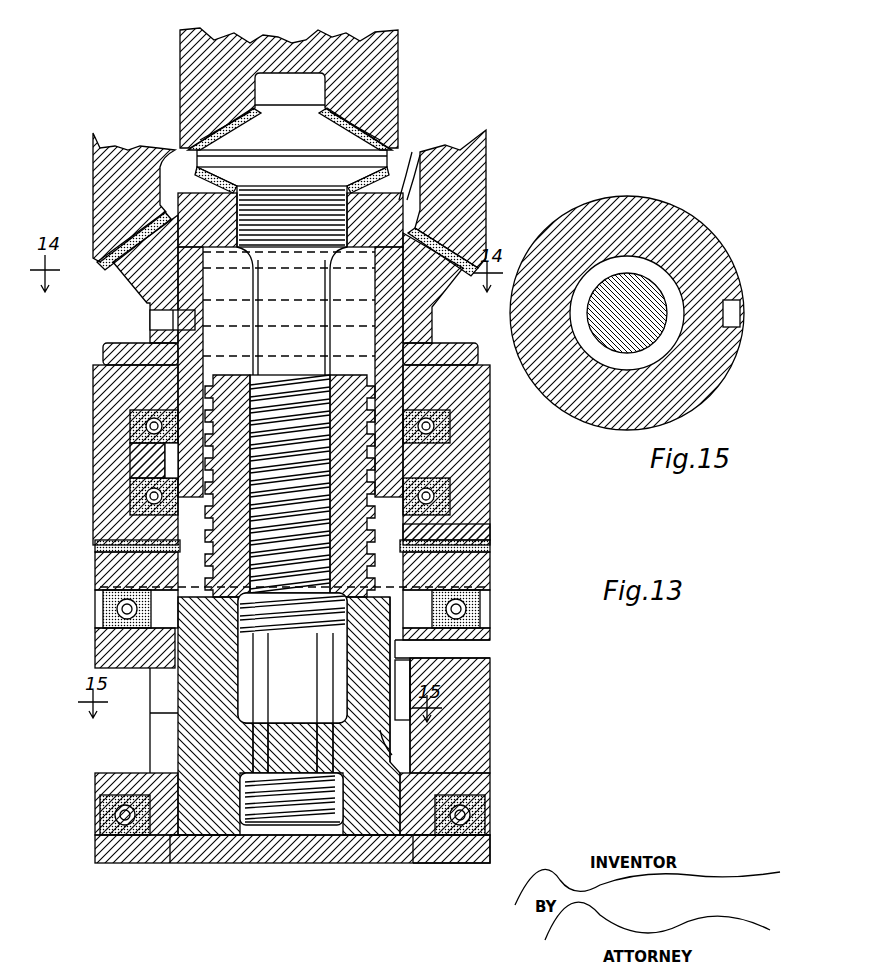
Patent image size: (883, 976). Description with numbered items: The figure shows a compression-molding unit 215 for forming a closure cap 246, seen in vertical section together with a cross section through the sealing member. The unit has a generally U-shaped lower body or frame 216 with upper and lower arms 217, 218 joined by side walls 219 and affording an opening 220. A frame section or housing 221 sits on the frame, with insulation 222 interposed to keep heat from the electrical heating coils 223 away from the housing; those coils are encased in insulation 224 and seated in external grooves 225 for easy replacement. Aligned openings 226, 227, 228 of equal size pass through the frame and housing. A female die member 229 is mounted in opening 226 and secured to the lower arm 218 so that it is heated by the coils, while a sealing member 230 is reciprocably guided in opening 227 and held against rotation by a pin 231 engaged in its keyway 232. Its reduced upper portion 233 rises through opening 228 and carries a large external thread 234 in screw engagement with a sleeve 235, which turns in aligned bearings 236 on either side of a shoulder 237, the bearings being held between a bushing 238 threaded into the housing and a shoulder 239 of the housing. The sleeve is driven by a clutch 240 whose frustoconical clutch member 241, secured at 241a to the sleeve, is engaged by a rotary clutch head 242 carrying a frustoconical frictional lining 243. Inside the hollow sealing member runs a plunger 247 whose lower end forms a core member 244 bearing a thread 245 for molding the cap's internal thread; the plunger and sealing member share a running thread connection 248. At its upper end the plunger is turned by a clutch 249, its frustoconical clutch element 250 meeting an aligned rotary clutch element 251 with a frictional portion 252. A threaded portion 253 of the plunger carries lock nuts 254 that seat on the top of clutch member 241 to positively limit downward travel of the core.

In FIG. 13, the unit 215 is at (68, 414).
In FIG. 13, the lower body or frame 216 is at (478, 750).
In FIG. 13, the upper arm 217 is at (485, 565).
In FIG. 13, the lower arm 218 is at (130, 862).
In FIG. 13, the side walls 219 is at (480, 728).
In FIG. 13, the opening 220 is at (140, 761).
In FIG. 13, the frame section or housing 221 is at (487, 478).
In FIG. 13, the insulation 222 is at (492, 546).
In FIG. 13, the electrical heating coils 223 is at (485, 606).
In FIG. 13, the insulation 224 is at (485, 625).
In FIG. 13, the external grooves 225 is at (488, 637).
In FIG. 13, the opening 226 is at (422, 836).
In FIG. 13, the opening 227 is at (100, 555).
In FIG. 13, the opening 228 is at (485, 530).
In FIG. 13, the female die member 229 is at (207, 860).
In FIG. 13, the sealing member 230 is at (160, 720).
In FIG. 15, the sealing member 230 is at (677, 228).
In FIG. 13, the pin 231 is at (470, 648).
In FIG. 13, the keyway 232 is at (490, 700).
In FIG. 15, the keyway 232 is at (737, 313).
In FIG. 13, the upper portion 233 is at (225, 470).
In FIG. 13, the external thread 234 is at (205, 516).
In FIG. 13, the sleeve 235 is at (105, 353).
In FIG. 13, the bearings 236 is at (130, 420).
In FIG. 13, the shoulder 237 is at (140, 462).
In FIG. 13, the bushing 238 is at (130, 384).
In FIG. 13, the shoulder 239 is at (485, 512).
In FIG. 13, the clutch 240 is at (503, 173).
In FIG. 13, the clutch member 241 is at (178, 290).
In FIG. 13, the securing point 241a is at (160, 320).
In FIG. 13, the clutch head 242 is at (470, 148).
In FIG. 13, the frictional lining 243 is at (448, 237).
In FIG. 13, the core member 244 is at (300, 812).
In FIG. 13, the thread 245 is at (265, 812).
In FIG. 13, the closure cap 246 is at (345, 792).
In FIG. 13, the plunger 247 is at (289, 510).
In FIG. 15, the plunger 247 is at (663, 333).
In FIG. 13, the running thread connection 248 is at (160, 560).
In FIG. 13, the clutch 249 is at (142, 76).
In FIG. 13, the frustoconical clutch element 250 is at (186, 140).
In FIG. 13, the rotary clutch element 251 is at (180, 34).
In FIG. 13, the frictional portion 252 is at (226, 128).
In FIG. 13, the threaded portion 253 is at (288, 205).
In FIG. 13, the lock nuts 254 is at (405, 200).